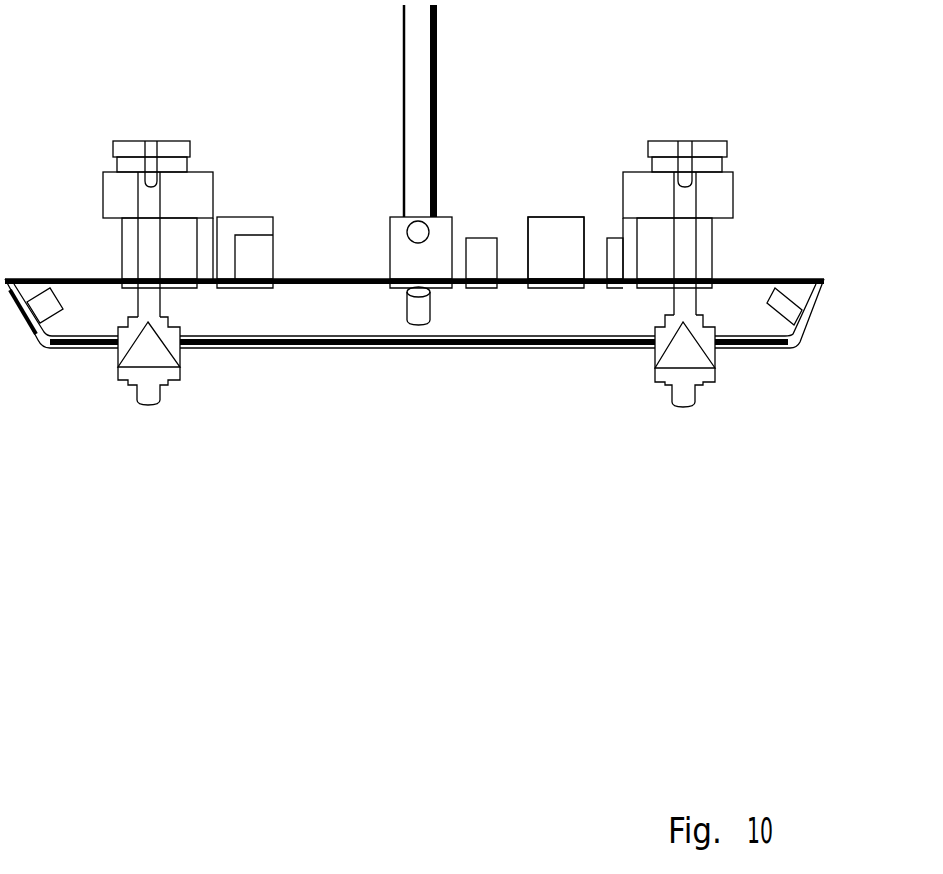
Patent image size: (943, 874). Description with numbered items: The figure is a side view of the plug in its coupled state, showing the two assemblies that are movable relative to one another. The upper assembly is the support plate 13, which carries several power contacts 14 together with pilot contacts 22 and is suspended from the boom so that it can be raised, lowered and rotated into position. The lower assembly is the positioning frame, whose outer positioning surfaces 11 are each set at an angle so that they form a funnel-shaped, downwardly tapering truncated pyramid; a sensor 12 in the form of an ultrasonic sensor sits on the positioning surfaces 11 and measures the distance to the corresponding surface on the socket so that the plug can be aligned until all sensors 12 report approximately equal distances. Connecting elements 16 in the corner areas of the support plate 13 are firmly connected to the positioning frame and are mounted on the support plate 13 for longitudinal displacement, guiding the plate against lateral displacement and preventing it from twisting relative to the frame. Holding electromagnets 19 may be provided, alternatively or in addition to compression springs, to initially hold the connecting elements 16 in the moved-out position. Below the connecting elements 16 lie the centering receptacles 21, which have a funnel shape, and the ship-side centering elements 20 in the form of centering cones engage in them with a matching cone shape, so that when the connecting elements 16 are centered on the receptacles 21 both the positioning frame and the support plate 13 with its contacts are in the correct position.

The positioning surfaces 11 is at (818, 281).
The sensor 12 is at (43, 303).
The support plate 13 is at (510, 268).
The power contacts 14 is at (248, 218).
The connecting elements 16 is at (684, 233).
The holding electromagnets 19 is at (115, 160).
The centering elements 20 is at (162, 373).
The centering receptacles 21 is at (178, 338).
The pilot contacts 22 is at (250, 252).